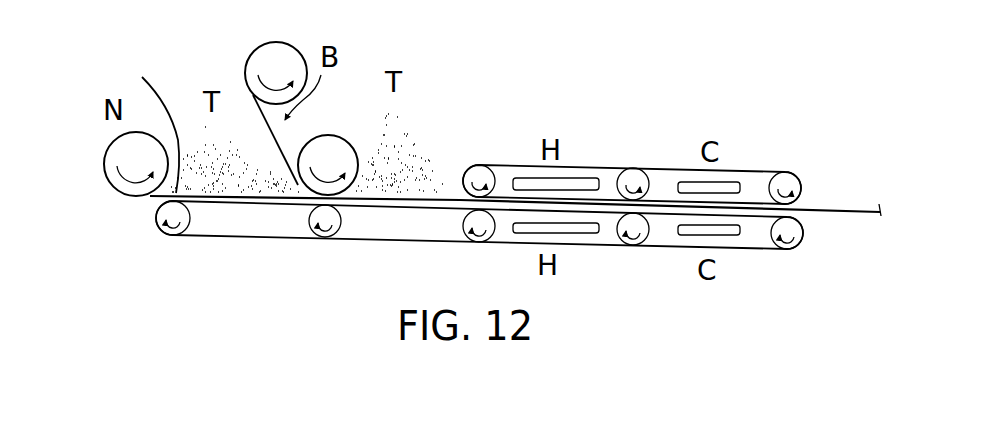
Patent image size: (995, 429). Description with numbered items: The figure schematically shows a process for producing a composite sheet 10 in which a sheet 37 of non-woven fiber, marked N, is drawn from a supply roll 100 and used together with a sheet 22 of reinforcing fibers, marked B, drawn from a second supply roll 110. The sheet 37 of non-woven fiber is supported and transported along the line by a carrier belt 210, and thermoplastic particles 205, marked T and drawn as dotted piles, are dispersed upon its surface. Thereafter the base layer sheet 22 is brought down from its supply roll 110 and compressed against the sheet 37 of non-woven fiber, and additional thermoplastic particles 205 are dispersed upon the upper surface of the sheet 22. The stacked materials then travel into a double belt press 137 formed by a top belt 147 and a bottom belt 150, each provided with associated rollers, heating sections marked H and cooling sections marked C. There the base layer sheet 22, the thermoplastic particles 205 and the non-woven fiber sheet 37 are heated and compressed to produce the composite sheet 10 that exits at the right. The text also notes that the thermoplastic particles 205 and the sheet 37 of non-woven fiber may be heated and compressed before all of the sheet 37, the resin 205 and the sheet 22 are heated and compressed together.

The composite sheet 10 is at (834, 206).
The sheet of reinforcing fibers 22 is at (297, 131).
The sheet of non-woven fiber 37 is at (140, 123).
The supply roll 100 is at (113, 188).
The supply roll 110 is at (249, 60).
The double belt press 137 is at (742, 142).
The top belt 147 is at (595, 165).
The bottom belt 150 is at (613, 250).
The thermoplastic particles 205 is at (200, 116).
The carrier belt 210 is at (271, 240).